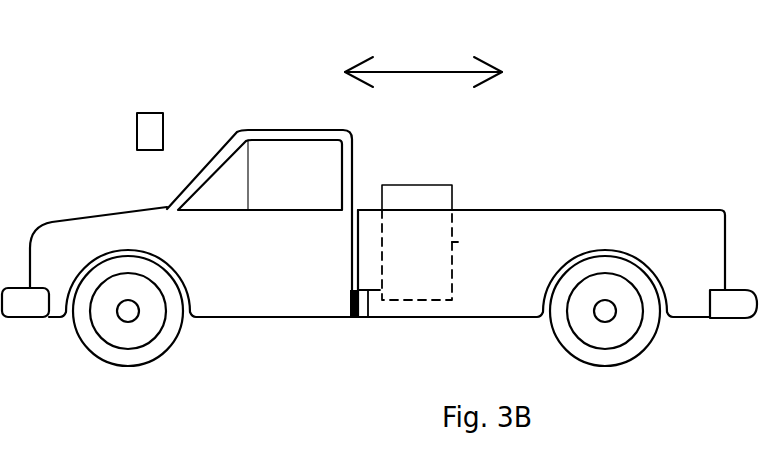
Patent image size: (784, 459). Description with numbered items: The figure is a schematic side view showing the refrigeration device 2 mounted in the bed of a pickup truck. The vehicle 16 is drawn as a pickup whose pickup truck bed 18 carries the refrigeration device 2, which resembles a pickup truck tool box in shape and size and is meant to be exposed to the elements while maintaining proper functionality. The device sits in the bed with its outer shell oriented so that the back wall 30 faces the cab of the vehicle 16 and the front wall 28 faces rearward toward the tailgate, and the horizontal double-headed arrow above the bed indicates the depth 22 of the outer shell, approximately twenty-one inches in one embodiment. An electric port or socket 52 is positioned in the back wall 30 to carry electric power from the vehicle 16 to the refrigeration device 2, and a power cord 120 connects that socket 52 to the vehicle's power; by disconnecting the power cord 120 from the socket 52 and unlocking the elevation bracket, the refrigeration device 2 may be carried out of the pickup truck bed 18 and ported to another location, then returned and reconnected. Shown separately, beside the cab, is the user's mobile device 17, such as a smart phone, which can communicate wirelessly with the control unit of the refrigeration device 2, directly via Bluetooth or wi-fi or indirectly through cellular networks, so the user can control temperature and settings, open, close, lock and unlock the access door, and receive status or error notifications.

The refrigeration device 2 is at (463, 167).
The vehicle 16 is at (267, 128).
The mobile device 17 is at (137, 128).
The pickup truck bed 18 is at (526, 210).
The depth 22 is at (415, 72).
The front wall 28 is at (456, 242).
The back wall 30 is at (383, 234).
The electric port or socket 52 is at (378, 285).
The power cord 120 is at (368, 317).